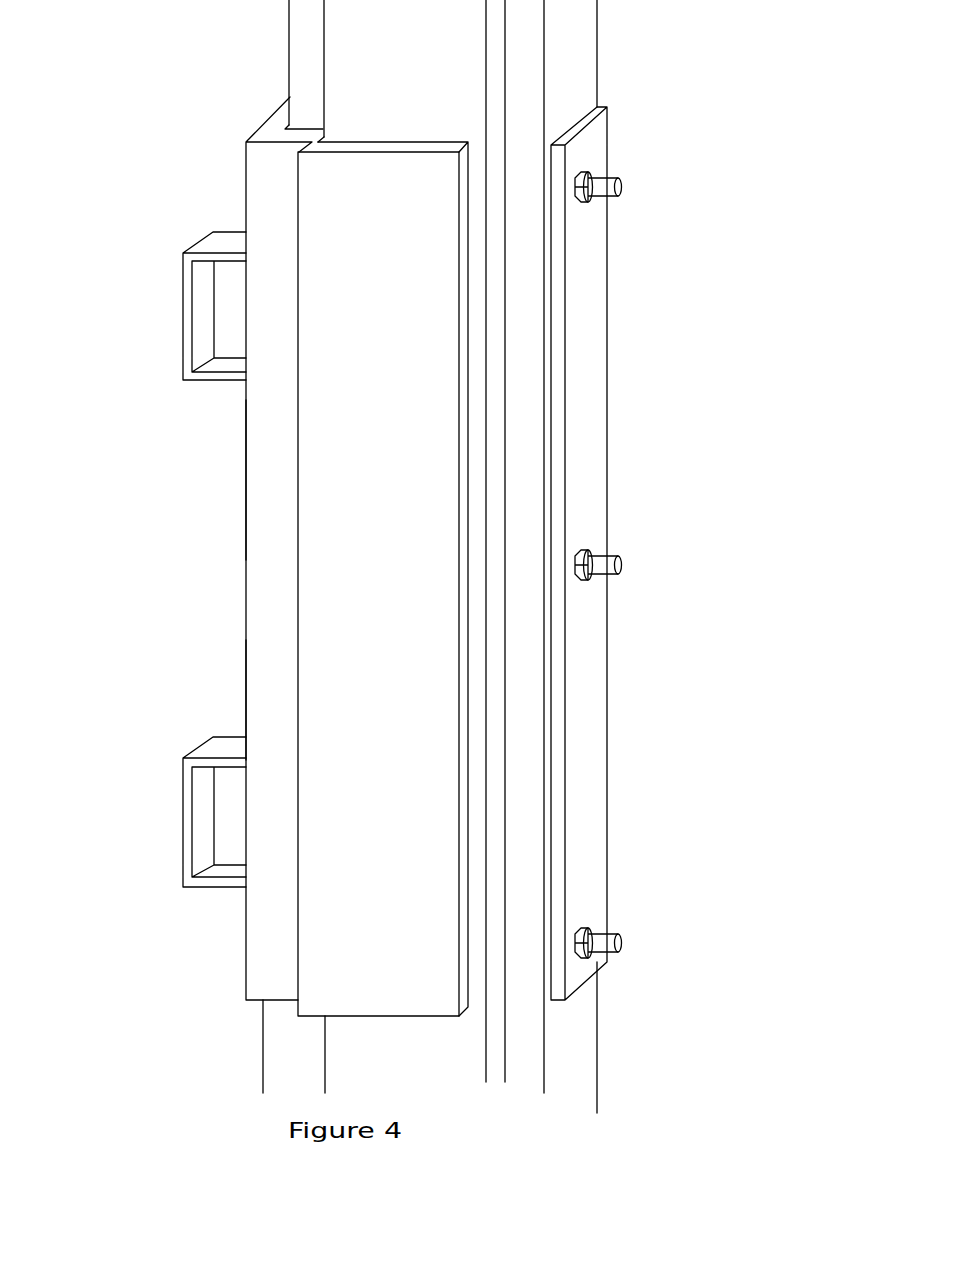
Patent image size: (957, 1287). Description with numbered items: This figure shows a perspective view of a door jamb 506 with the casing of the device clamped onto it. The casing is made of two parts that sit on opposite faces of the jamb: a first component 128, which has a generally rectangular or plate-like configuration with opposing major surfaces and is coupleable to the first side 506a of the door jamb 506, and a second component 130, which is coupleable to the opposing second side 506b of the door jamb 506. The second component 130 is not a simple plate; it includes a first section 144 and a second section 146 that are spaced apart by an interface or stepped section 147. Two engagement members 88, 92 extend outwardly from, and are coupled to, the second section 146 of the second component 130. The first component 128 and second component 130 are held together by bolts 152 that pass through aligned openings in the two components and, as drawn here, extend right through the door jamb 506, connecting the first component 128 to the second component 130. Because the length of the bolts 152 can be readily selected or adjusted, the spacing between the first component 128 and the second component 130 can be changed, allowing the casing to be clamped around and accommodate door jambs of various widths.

The door jamb 506 is at (395, 57).
The first side of the door jamb 506a is at (573, 48).
The second side of the door jamb 506b is at (263, 1044).
The second component 130 is at (227, 571).
The stepped section 147 is at (262, 483).
The second section 146 is at (243, 700).
The first section 144 is at (345, 635).
The engagement member 88 is at (183, 298).
The engagement member 92 is at (183, 840).
The first component 128 is at (622, 405).
The bolts 152 is at (632, 193).